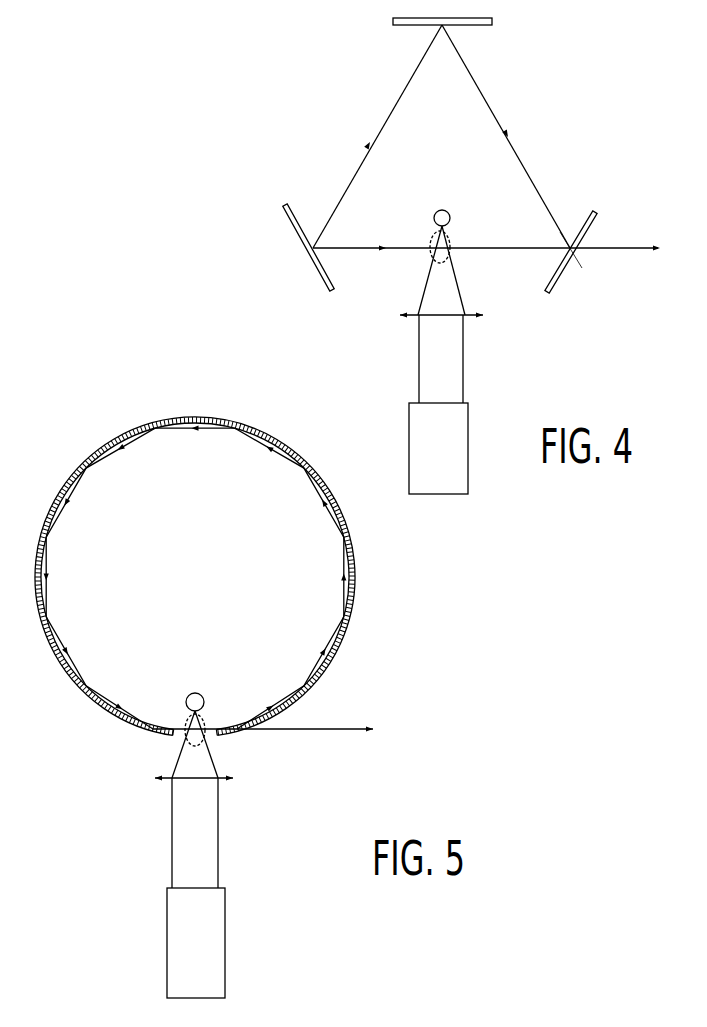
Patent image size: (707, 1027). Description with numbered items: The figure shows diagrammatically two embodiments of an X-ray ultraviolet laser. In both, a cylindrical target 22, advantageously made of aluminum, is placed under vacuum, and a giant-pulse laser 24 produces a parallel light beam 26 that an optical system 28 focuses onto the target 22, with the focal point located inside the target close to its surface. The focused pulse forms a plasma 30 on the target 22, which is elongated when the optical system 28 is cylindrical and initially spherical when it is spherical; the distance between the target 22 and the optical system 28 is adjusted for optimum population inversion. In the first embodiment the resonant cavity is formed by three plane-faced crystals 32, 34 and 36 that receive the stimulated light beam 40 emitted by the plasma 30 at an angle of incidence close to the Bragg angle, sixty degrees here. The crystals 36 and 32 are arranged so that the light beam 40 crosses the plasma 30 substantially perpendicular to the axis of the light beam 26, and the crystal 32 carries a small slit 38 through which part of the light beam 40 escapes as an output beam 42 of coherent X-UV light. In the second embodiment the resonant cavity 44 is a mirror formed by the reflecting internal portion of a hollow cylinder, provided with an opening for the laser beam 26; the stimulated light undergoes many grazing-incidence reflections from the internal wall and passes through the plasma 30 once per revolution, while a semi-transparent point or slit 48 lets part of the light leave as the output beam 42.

In FIG. 4, the target 22 is at (441, 210).
In FIG. 5, the target 22 is at (195, 693).
In FIG. 4, the laser 24 is at (420, 465).
In FIG. 5, the laser 24 is at (178, 946).
In FIG. 4, the parallel light beam 26 is at (460, 378).
In FIG. 5, the parallel light beam 26 is at (212, 840).
In FIG. 4, the optical system 28 is at (450, 320).
In FIG. 5, the optical system 28 is at (205, 782).
In FIG. 4, the plasma 30 is at (450, 234).
In FIG. 5, the plasma 30 is at (188, 715).
In FIG. 4, the crystal 32 is at (597, 214).
In FIG. 4, the crystal 34 is at (487, 25).
In FIG. 4, the crystal 36 is at (318, 282).
In FIG. 4, the small slit 38 is at (576, 254).
In FIG. 4, the light beam 40 is at (522, 160).
In FIG. 4, the output beam 42 is at (620, 250).
In FIG. 5, the output beam 42 is at (317, 731).
In FIG. 5, the resonant cavity 44 is at (356, 597).
In FIG. 5, the semi-transparent point 48 is at (237, 723).